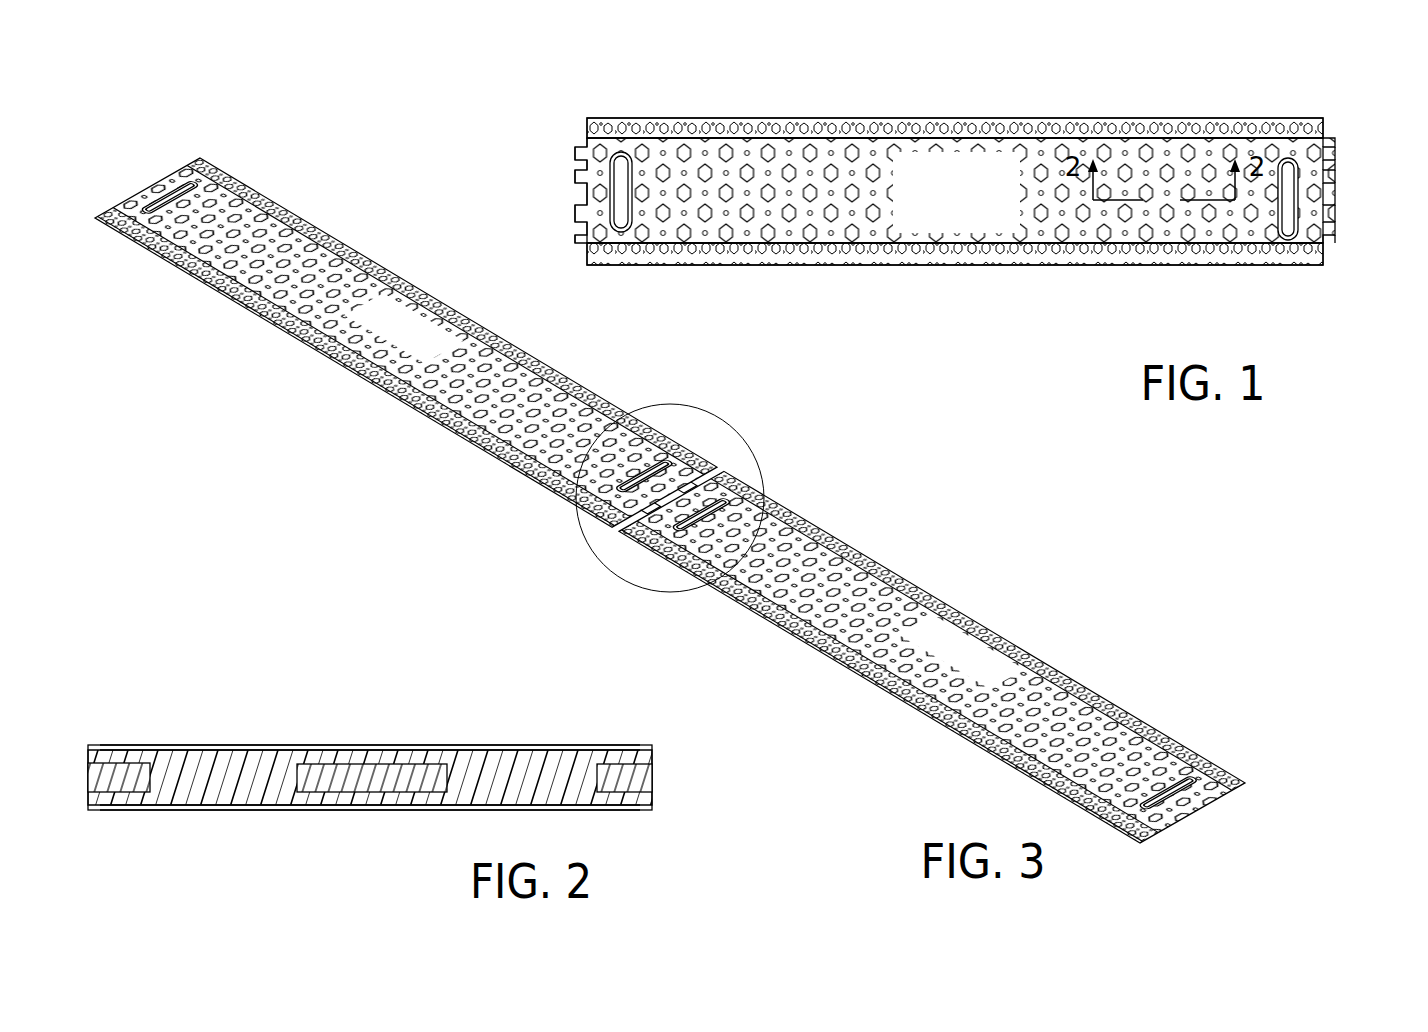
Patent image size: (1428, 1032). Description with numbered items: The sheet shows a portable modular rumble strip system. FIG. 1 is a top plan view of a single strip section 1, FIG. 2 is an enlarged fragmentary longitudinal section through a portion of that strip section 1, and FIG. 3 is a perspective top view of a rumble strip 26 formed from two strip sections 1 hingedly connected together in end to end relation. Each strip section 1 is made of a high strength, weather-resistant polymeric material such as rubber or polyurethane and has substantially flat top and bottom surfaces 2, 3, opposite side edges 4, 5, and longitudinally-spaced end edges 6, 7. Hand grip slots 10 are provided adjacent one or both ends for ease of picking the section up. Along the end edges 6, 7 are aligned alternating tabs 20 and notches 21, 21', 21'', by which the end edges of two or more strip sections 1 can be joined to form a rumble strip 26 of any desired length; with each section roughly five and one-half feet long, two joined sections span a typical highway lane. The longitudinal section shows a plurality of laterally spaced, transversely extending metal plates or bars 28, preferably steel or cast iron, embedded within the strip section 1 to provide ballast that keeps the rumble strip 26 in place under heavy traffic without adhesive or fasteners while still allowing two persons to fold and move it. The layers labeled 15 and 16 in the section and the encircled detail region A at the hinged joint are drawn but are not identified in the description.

In FIG. 1, the strip section 1 is at (955, 96).
In FIG. 3, the strip section 1 is at (592, 350).
In FIG. 2, the strip section 1 is at (398, 715).
In FIG. 1, the top surface 2 is at (770, 155).
In FIG. 2, the top surface 2 is at (240, 745).
In FIG. 2, the bottom surface 3 is at (232, 810).
In FIG. 1, the side edge 4 is at (745, 267).
In FIG. 1, the side edge 5 is at (697, 119).
In FIG. 1, the end edge 6 is at (590, 190).
In FIG. 3, the end edge 6 is at (196, 182).
In FIG. 1, the end edge 7 is at (1336, 202).
In FIG. 3, the end edge 7 is at (622, 540).
In FIG. 1, the hand grip slot 10 is at (620, 152).
In FIG. 1, the top skin layer 15 is at (826, 124).
In FIG. 2, the top skin layer 15 is at (522, 737).
In FIG. 2, the bottom skin layer 16 is at (540, 822).
In FIG. 1, the tab 20 is at (580, 148).
In FIG. 1, the notch 21 is at (911, 205).
In FIG. 1, the notch 21' is at (941, 192).
In FIG. 1, the notch 21'' is at (923, 210).
In FIG. 3, the rumble strip 26 is at (820, 466).
In FIG. 2, the metal plate or bar 28 is at (128, 792).
In FIG. 3, the detail region A is at (699, 408).